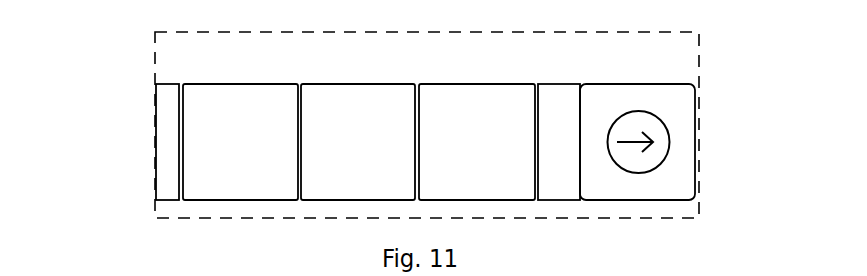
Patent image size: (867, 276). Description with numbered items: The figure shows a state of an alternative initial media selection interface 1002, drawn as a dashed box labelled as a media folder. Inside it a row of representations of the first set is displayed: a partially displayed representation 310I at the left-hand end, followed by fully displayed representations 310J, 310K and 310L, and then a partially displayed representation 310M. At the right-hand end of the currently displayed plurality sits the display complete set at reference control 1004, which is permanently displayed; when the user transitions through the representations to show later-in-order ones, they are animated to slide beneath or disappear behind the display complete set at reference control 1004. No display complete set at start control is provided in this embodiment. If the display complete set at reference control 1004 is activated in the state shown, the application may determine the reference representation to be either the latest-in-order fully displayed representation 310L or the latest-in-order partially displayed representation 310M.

The alternative initial media selection interface 1002 is at (128, 47).
The representation 310I is at (155, 149).
The representation 310J is at (240, 142).
The representation 310K is at (358, 142).
The representation 310L is at (477, 142).
The representation 310M is at (554, 83).
The display complete set at reference control 1004 is at (699, 158).